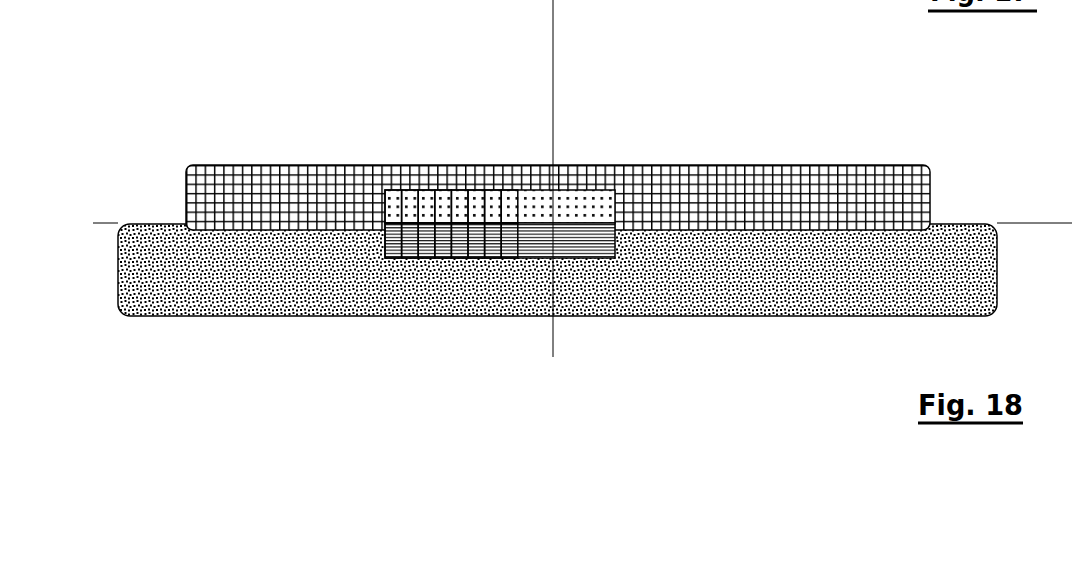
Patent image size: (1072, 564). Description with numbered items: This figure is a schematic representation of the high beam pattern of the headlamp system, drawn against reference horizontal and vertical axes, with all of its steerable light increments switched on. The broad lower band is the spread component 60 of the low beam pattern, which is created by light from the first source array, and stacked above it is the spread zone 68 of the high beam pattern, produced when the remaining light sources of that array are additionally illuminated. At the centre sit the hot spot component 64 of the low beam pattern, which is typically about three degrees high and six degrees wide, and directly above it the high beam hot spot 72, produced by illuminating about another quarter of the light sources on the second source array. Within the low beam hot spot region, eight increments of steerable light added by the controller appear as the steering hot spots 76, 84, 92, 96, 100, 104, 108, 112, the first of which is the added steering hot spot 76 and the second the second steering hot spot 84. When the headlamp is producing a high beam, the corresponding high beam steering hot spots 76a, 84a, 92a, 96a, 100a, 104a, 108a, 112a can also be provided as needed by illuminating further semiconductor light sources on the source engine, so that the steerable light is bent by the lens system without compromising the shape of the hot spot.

The spread component 60 is at (538, 316).
The hot spot component 64 is at (590, 174).
The spread zone 68 is at (220, 180).
The high beam hot spot 72 is at (516, 152).
The steering hot spot 76 is at (555, 329).
The high beam steering hot spot 76a is at (528, 176).
The second steering hot spot 84 is at (507, 303).
The high beam steering hot spot 84a is at (520, 154).
The steering hot spot 92 is at (490, 318).
The high beam steering hot spot 92a is at (515, 138).
The steering hot spot 96 is at (463, 337).
The high beam steering hot spot 96a is at (495, 121).
The steering hot spot 100 is at (414, 329).
The high beam steering hot spot 100a is at (484, 111).
The steering hot spot 104 is at (422, 257).
The high beam steering hot spot 104a is at (393, 118).
The steering hot spot 108 is at (365, 333).
The high beam steering hot spot 108a is at (407, 197).
The steering hot spot 112 is at (332, 322).
The high beam steering hot spot 112a is at (387, 197).